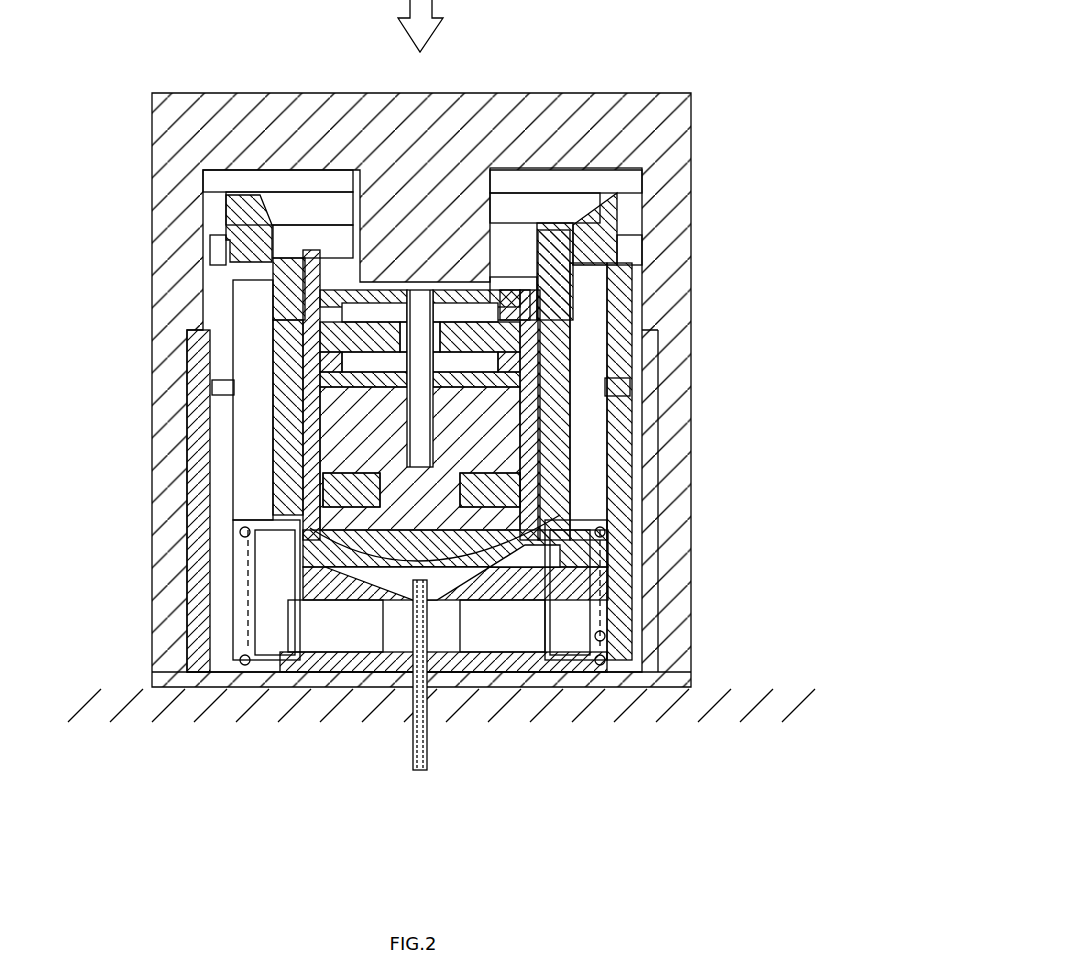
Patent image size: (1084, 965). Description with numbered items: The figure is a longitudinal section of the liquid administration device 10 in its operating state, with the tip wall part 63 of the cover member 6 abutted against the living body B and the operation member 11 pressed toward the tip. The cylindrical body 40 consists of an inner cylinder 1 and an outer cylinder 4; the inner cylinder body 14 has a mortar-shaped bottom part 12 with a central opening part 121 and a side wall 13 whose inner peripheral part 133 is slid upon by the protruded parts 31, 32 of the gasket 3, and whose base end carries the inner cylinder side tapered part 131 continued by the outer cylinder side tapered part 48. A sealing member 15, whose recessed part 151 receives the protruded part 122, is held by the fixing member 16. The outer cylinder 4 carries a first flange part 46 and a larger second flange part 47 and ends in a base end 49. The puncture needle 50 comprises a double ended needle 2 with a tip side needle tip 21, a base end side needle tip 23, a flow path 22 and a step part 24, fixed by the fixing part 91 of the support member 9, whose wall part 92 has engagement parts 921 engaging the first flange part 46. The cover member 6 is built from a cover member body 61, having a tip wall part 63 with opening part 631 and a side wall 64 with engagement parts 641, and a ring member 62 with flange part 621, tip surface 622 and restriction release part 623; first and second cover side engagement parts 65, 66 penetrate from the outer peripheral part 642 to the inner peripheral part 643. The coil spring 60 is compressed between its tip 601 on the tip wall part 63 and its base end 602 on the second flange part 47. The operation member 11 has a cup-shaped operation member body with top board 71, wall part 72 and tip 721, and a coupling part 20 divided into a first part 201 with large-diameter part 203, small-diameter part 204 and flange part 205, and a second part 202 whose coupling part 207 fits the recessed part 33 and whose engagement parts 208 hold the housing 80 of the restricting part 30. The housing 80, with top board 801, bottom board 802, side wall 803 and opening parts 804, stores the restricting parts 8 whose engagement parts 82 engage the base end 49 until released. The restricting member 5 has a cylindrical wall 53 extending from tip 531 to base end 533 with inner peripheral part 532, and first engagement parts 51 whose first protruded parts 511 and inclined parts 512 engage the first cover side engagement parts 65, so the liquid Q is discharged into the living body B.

The liquid administration device 10 is at (684, 49).
The operation member 11 is at (695, 122).
The top board 71 is at (505, 108).
The wall part 72 is at (155, 182).
The coupling part 20 is at (502, 176).
The first part 201 is at (467, 212).
The large-diameter part 203 is at (360, 182).
The flange part 205 is at (342, 262).
The engagement parts 208 is at (350, 255).
The second part 202 is at (486, 427).
The small-diameter part 204 is at (245, 356).
The coupling part 207 is at (658, 468).
The base end of the outer cylinder 49 is at (232, 197).
The outer cylinder side tapered part 48 is at (242, 232).
The engagement parts 641 is at (230, 216).
The flange part 621 is at (214, 241).
The tip surface 622 is at (222, 258).
The restriction release part 623 is at (658, 178).
The ring member 62 is at (660, 196).
The cover member body 61 is at (660, 258).
The cover member 6 is at (808, 170).
The inner cylinder side tapered part 131 is at (260, 272).
The restricting parts 8 is at (307, 317).
The top board 801 is at (487, 283).
The bottom board 802 is at (468, 376).
The side wall 803 is at (332, 315).
The opening part 804 is at (214, 337).
The engagement part 82 is at (302, 330).
The housing 80 is at (498, 339).
The second cover side engagement parts 66 is at (250, 379).
The restricting part 30 is at (660, 304).
The base end of the cylindrical wall 533 is at (690, 315).
The cylindrical wall 53 is at (646, 442).
The restricting member 5 is at (660, 454).
The protruded part 31 is at (600, 494).
The protruded part 32 is at (300, 485).
The recessed part 33 is at (520, 512).
The gasket 3 is at (312, 504).
The outer cylinder 4 is at (270, 408).
The cylindrical body 40 is at (100, 388).
The inner cylinder 1 is at (300, 427).
The inner peripheral part 133 is at (304, 449).
The side wall 64 is at (622, 460).
The second flange part 47 is at (300, 538).
The inner cylinder body 14 is at (95, 460).
The side wall 13 is at (270, 525).
The bottom part 12 is at (265, 548).
The engagement parts 921 is at (220, 545).
The inner peripheral part 532 is at (210, 560).
The wall part 92 is at (235, 578).
The first engagement parts 51 is at (250, 595).
The inclined part 512 is at (260, 615).
The first protruded part 511 is at (265, 640).
The first cover side engagement parts 65 is at (420, 590).
The first flange part 46 is at (235, 660).
The coil spring 60 is at (187, 677).
The tip 601 is at (230, 690).
The fixing part 91 is at (275, 690).
The support member 9 is at (367, 672).
The double ended needle 2 is at (409, 732).
The puncture needle 50 is at (300, 738).
The flow path 22 is at (412, 710).
The tip side needle tip 21 is at (417, 739).
The step part 24 is at (430, 700).
The protruded part 122 is at (445, 690).
The recessed part 151 is at (470, 690).
The fixing member 16 is at (500, 690).
The sealing member 15 is at (485, 690).
The opening part 631 is at (545, 690).
The tip wall part 63 is at (585, 690).
The tip 721 is at (670, 688).
The base end side needle tip 23 is at (362, 625).
The opening part 121 is at (487, 643).
The base end 602 is at (650, 515).
The outer peripheral part 642 is at (625, 530).
The inner peripheral part 643 is at (640, 548).
The tip of the cylindrical wall 531 is at (658, 660).
The liquid Q is at (640, 565).
The living body B is at (742, 690).